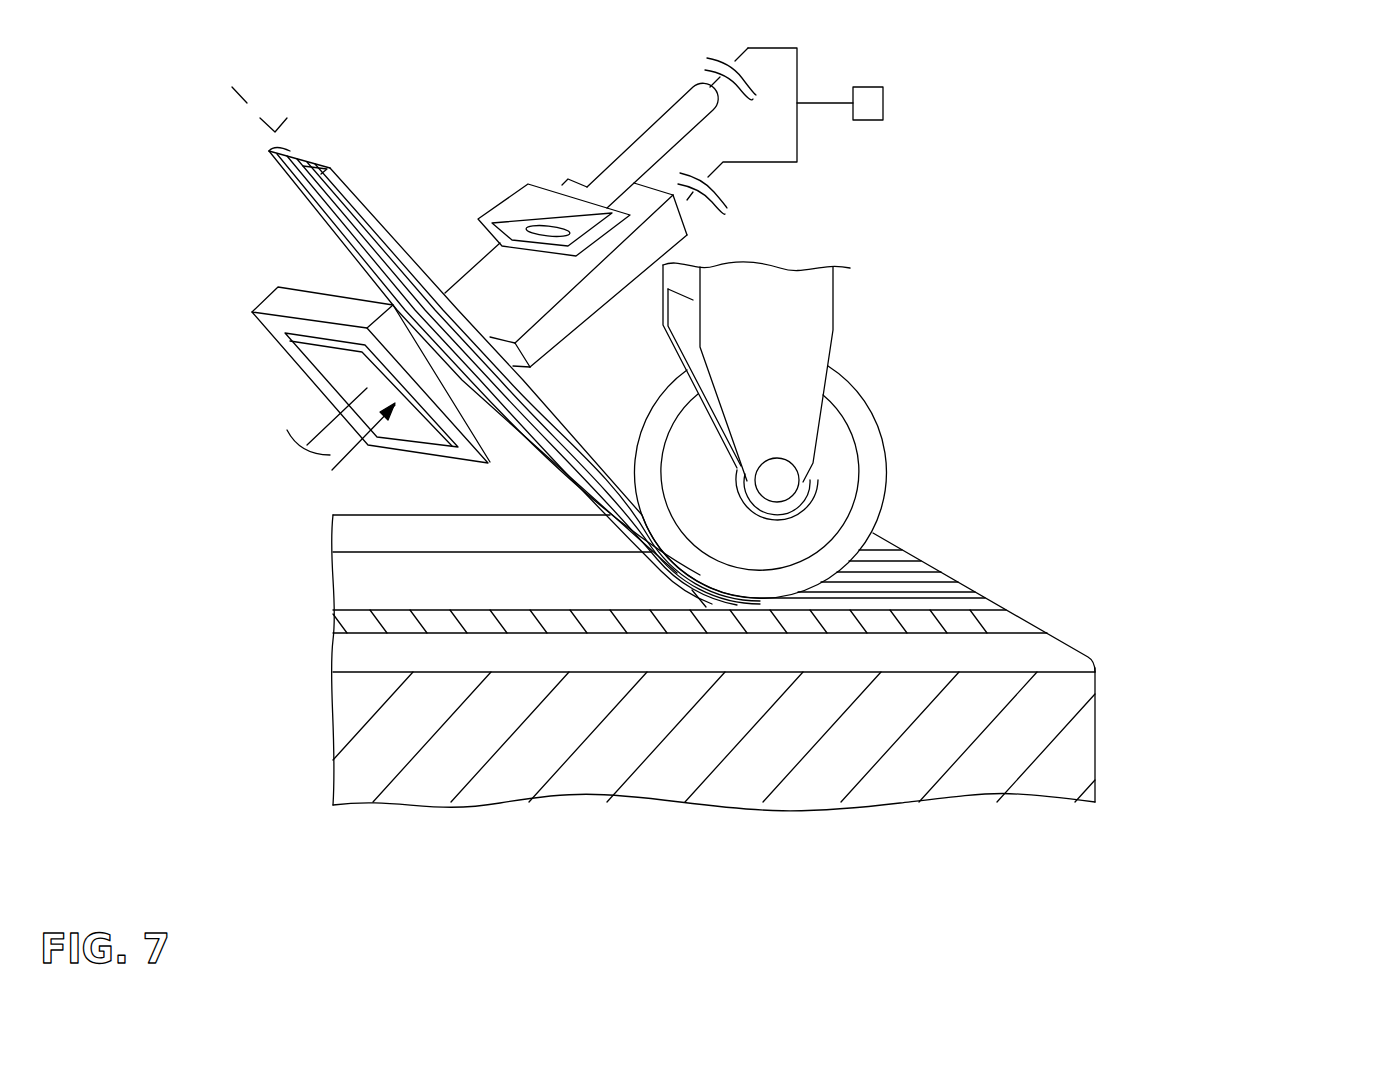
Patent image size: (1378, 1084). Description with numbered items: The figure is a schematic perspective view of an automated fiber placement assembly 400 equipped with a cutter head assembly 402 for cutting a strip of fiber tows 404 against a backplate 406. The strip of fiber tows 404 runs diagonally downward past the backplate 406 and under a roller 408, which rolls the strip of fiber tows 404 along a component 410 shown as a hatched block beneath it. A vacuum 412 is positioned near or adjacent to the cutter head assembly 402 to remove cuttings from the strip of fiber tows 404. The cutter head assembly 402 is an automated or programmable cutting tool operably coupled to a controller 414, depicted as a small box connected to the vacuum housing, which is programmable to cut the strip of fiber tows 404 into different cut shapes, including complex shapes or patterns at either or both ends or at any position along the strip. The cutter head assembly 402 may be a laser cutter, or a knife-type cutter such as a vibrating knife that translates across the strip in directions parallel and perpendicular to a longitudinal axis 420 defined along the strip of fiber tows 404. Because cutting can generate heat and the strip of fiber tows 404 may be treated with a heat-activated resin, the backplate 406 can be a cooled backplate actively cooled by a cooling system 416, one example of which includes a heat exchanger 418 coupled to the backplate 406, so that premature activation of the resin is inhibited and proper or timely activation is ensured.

The automated fiber placement assembly 400 is at (760, 426).
The cutter head assembly 402 is at (521, 205).
The strip of fiber tows 404 is at (308, 195).
The backplate 406 is at (325, 375).
The roller 408 is at (858, 465).
The component 410 is at (353, 702).
The vacuum 412 is at (648, 243).
The controller 414 is at (867, 110).
The cooling system 416 is at (328, 462).
The heat exchanger 418 is at (333, 357).
The longitudinal axis 420 is at (302, 105).